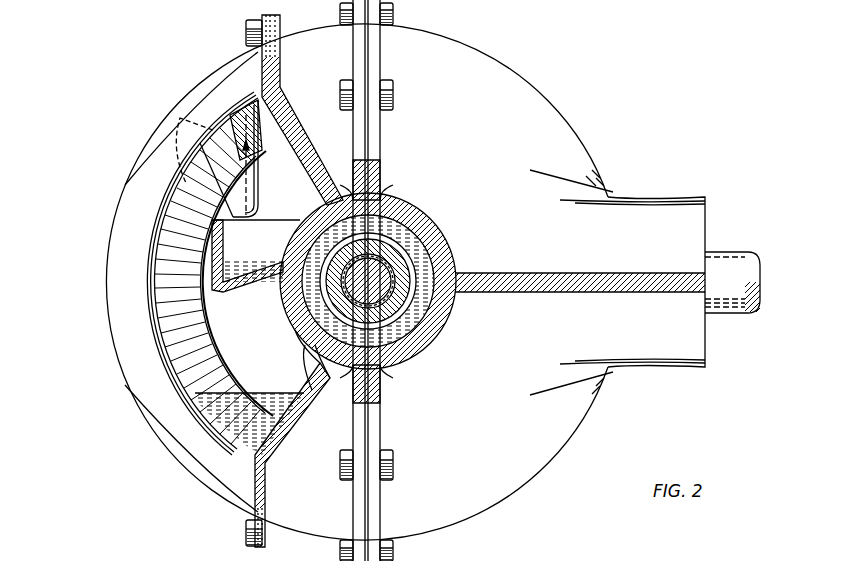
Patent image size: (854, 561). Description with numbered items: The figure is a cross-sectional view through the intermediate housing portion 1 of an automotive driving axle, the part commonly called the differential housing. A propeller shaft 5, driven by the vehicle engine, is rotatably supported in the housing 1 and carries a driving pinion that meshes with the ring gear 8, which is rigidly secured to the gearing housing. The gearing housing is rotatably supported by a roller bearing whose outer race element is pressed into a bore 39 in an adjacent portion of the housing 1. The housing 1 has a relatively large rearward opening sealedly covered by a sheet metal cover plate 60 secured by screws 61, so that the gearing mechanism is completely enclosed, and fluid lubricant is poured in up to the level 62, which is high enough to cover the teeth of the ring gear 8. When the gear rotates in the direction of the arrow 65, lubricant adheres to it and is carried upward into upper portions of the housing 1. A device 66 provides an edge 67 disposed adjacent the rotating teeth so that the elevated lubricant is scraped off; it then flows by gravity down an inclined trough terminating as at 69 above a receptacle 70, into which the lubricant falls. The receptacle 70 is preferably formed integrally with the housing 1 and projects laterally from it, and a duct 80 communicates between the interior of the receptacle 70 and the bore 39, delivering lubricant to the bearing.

The intermediate housing portion 1 is at (500, 82).
The propeller shaft 5 is at (476, 560).
The ring gear 8 is at (168, 340).
The bore 39 is at (300, 367).
The sheet metal cover plate 60 is at (113, 300).
The screws 61 is at (246, 30).
The lubricant level 62 is at (283, 392).
The arrow 65 is at (225, 330).
The device 66 is at (260, 180).
The edge 67 is at (236, 126).
The trough terminus 69 is at (252, 217).
The receptacle 70 is at (230, 248).
The duct 80 is at (292, 304).